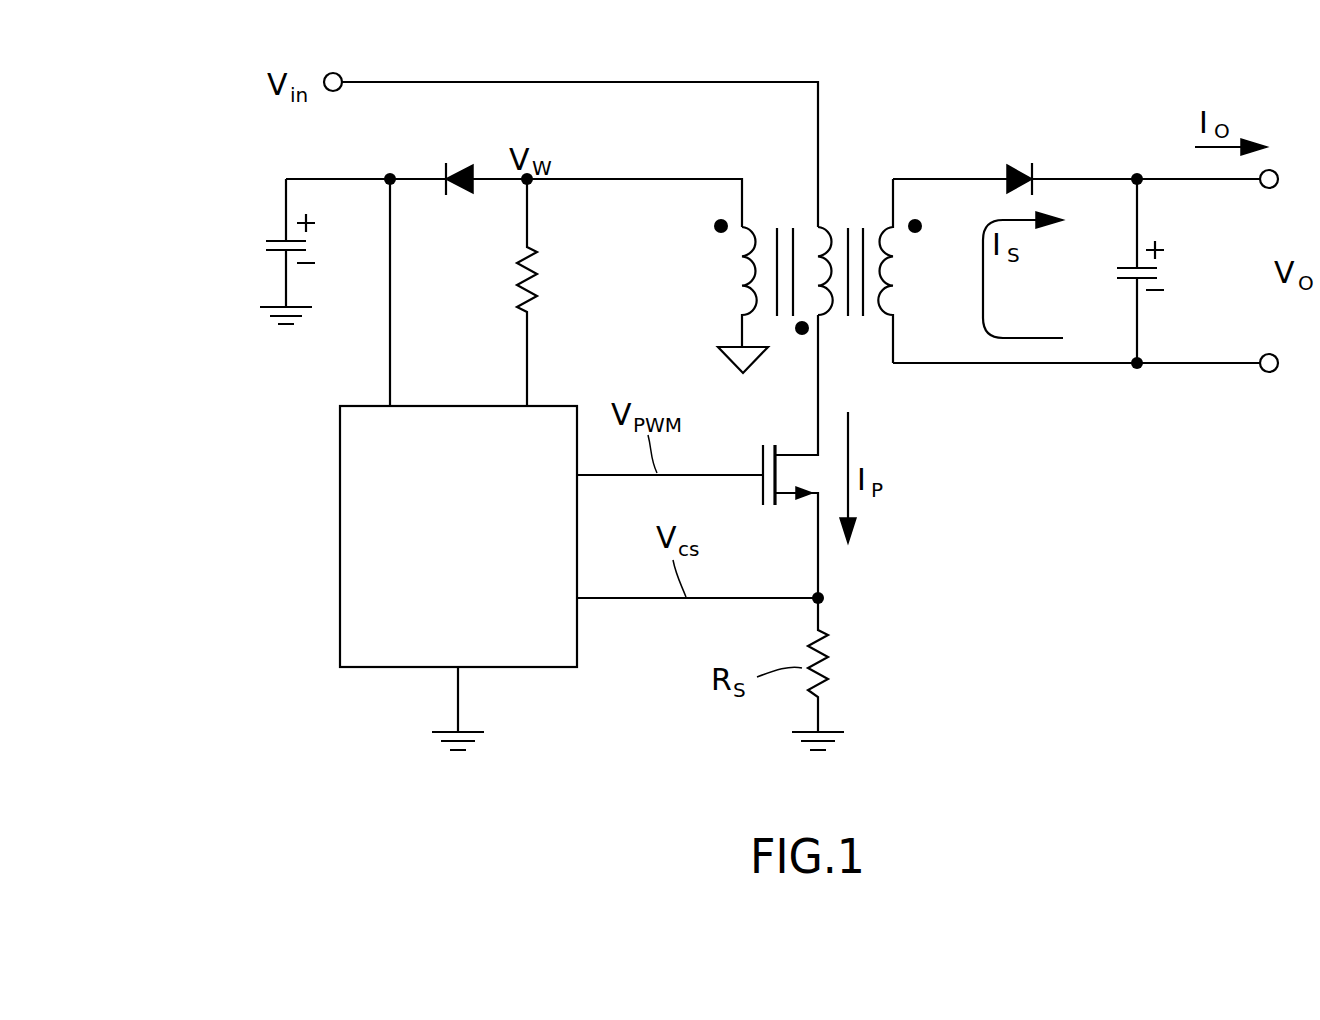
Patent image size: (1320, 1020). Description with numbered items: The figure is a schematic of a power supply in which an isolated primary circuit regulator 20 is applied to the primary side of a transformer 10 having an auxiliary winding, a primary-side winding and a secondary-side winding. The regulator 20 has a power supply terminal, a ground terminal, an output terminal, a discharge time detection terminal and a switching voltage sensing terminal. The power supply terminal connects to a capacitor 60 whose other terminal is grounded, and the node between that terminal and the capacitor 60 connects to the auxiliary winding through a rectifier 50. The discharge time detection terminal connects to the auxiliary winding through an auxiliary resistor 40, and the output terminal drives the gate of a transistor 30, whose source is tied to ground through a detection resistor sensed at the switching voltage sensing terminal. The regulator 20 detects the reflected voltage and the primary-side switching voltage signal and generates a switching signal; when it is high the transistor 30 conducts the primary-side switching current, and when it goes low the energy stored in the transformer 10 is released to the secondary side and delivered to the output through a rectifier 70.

The transformer 10 is at (856, 205).
The isolated primary circuit regulator 20 is at (338, 478).
The transistor 30 is at (770, 440).
The auxiliary resistor 40 is at (540, 276).
The rectifier 50 is at (462, 197).
The capacitor 60 is at (262, 245).
The rectifier 70 is at (1023, 163).